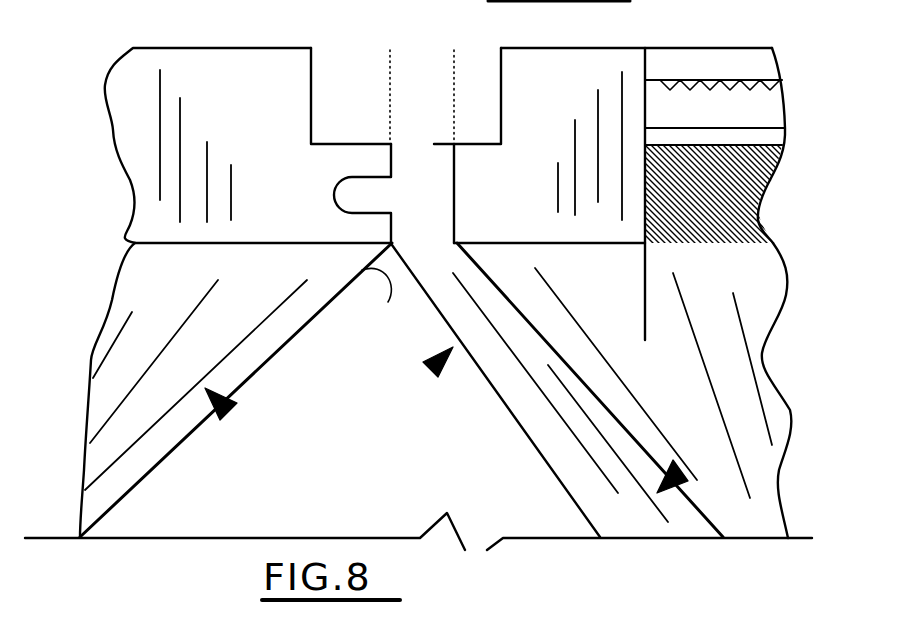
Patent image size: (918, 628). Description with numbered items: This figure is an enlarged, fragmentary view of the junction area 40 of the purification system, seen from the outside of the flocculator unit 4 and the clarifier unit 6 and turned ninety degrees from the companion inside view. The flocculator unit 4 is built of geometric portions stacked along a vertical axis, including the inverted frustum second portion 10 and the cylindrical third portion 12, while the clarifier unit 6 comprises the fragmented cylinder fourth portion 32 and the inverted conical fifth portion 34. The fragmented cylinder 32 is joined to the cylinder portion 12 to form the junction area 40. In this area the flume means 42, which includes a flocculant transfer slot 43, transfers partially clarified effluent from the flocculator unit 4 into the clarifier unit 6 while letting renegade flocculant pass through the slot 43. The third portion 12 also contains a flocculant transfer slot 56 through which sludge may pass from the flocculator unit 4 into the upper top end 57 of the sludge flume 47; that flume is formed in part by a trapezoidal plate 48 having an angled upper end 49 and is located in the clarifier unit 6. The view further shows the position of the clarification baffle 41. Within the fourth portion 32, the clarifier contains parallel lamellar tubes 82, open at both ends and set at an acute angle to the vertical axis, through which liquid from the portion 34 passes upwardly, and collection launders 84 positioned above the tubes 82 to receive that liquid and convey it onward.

The third portion 12 is at (220, 85).
The fourth portion 32 is at (550, 75).
The flume means 42 is at (477, 85).
The flocculant transfer slot 43 is at (422, 152).
The flocculant transfer slot 56 is at (365, 200).
The upper top end 57 is at (435, 167).
The angled upper end 49 is at (457, 230).
The collection launders 84 is at (733, 82).
The parallel tubes 82 is at (763, 218).
The clarification baffle 41 is at (645, 310).
The flocculator unit 4 is at (230, 413).
The second portion 10 is at (228, 368).
The junction area 40 is at (388, 302).
The fifth portion 34 is at (497, 423).
The clarifier unit 6 is at (418, 380).
The trapezoidal plate 48 is at (587, 383).
The sludge flume 47 is at (687, 470).